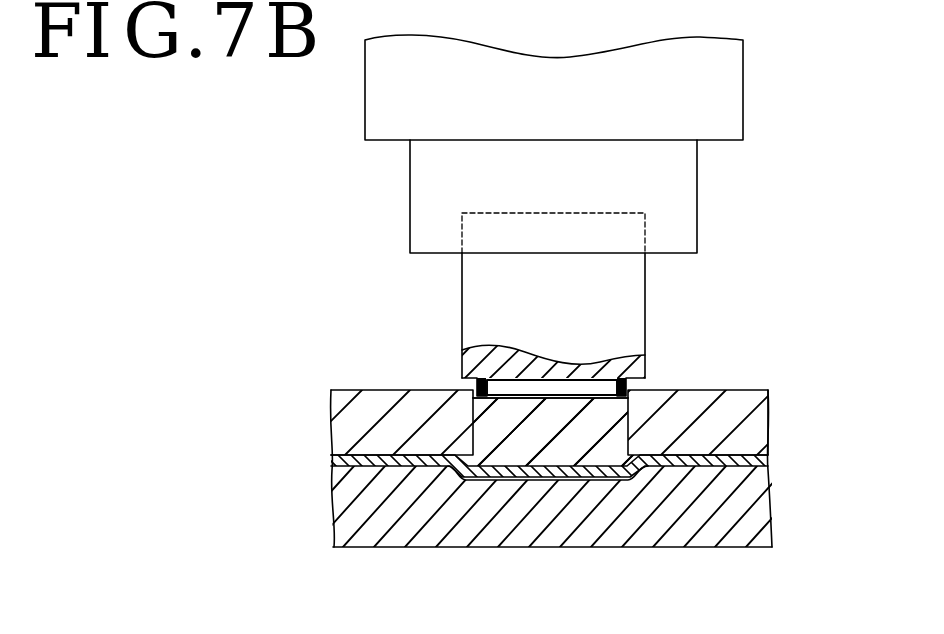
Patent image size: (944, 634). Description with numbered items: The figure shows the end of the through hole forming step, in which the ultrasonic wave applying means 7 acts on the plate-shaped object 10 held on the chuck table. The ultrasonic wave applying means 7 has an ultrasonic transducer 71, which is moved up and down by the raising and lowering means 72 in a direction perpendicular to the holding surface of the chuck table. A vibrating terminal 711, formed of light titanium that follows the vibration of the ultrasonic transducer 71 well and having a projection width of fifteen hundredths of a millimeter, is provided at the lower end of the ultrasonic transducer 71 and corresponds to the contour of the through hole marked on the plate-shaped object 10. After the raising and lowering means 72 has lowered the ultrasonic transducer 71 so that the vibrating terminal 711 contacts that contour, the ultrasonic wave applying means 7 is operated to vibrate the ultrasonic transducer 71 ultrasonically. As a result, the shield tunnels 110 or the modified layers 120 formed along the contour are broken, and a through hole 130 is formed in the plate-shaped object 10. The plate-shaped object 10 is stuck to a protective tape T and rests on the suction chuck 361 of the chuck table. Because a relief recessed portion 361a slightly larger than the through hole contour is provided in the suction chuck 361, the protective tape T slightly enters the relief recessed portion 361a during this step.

The ultrasonic wave applying means 7 is at (344, 177).
The raising and lowering means 72 is at (407, 223).
The ultrasonic transducer 71 is at (476, 303).
The vibrating terminal 711 is at (629, 385).
The plate-shaped object 10 is at (378, 389).
The shield tunnels 110 is at (630, 418).
The modified layers 120 is at (561, 431).
The through hole 130 is at (510, 393).
The protective tape T is at (757, 462).
The suction chuck 361 is at (760, 510).
The relief recessed portion 361a is at (543, 474).